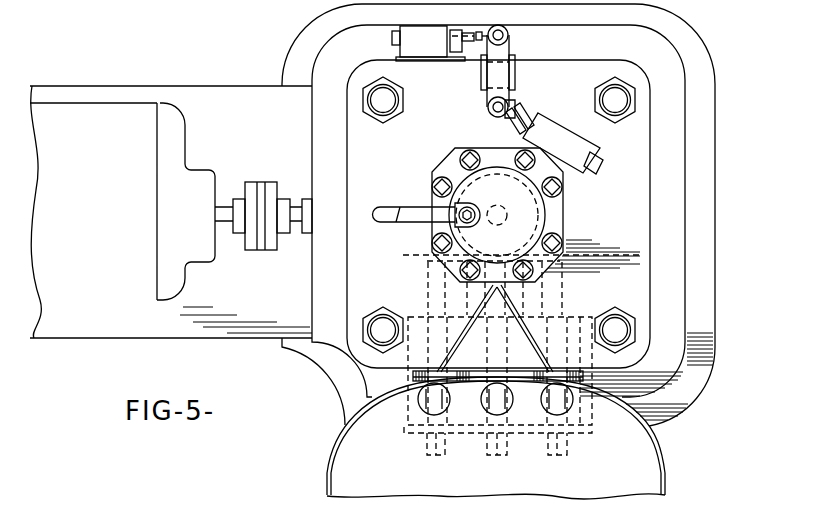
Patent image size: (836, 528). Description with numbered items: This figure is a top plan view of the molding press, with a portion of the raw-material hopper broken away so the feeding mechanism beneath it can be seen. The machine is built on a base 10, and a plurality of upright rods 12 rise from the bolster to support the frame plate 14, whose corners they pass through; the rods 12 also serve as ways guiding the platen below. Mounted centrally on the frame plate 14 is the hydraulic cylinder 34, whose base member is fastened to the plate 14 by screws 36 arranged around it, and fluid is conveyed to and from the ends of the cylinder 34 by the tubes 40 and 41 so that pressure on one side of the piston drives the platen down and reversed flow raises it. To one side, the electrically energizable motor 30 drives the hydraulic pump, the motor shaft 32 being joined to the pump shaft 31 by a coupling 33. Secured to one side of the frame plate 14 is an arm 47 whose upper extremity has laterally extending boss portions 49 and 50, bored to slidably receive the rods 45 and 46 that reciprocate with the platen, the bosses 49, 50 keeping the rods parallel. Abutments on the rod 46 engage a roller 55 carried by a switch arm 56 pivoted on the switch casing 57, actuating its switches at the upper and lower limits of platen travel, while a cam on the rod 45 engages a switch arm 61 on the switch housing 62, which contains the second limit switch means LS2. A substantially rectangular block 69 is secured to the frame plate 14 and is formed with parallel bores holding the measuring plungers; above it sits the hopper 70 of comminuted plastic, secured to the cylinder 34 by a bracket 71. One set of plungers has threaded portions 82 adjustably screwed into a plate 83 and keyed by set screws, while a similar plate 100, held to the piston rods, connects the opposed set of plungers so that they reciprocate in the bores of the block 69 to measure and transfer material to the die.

The base 10 is at (729, 79).
The upright struts or rods 12 is at (398, 100).
The frame plate 14 is at (513, 214).
The motor 30 is at (113, 275).
The pump shaft 31 is at (298, 222).
The motor shaft 32 is at (228, 222).
The coupling 33 is at (258, 250).
The cylinder 34 is at (547, 219).
The screws 36 is at (443, 185).
The fluid conveying tube 40 is at (420, 214).
The fluid conveying tube 41 is at (418, 195).
The rod 45 is at (490, 108).
The rod 46 is at (518, 67).
The arm 47 is at (510, 70).
The boss portion 49 is at (513, 112).
The boss portion 50 is at (508, 36).
The roller 55 is at (500, 32).
The switch arm 56 is at (470, 32).
The switch casing 57 is at (423, 33).
The switch arm 61 is at (524, 126).
The switch housing 62 is at (583, 122).
The second limit switch means LS2 is at (578, 140).
The block 69 is at (413, 374).
The hopper 70 is at (672, 465).
The bracket 71 is at (535, 333).
The threaded portions 82 is at (540, 457).
The plate 83 is at (583, 437).
The plate 100 is at (501, 369).